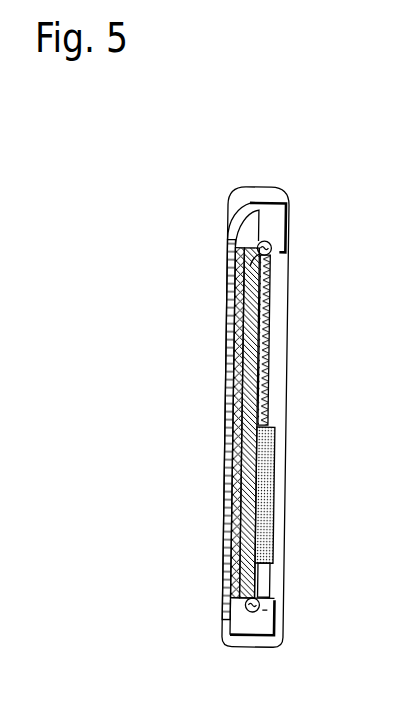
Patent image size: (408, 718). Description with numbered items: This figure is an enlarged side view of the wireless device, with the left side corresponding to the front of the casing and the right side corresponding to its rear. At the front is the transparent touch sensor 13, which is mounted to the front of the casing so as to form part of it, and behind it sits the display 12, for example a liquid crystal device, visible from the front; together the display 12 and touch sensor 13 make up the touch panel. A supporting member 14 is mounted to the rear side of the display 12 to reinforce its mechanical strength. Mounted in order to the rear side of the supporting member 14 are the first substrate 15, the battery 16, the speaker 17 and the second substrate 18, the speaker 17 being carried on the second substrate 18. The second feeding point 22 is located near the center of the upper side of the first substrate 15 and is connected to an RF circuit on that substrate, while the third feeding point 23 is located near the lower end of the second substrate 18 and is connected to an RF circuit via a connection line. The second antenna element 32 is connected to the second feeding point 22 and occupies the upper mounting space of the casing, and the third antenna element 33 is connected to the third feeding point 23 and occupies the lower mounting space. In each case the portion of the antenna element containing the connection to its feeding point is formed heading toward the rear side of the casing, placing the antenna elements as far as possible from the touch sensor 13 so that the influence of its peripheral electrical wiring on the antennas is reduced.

The display 12 is at (228, 232).
The touch sensor 13 is at (226, 231).
The supporting member 14 is at (230, 235).
The first substrate 15 is at (286, 363).
The battery 16 is at (277, 462).
The speaker 17 is at (274, 582).
The second substrate 18 is at (270, 560).
The second feeding point 22 is at (268, 253).
The third feeding point 23 is at (243, 612).
The second antenna element 32 is at (264, 193).
The third antenna element 33 is at (256, 647).